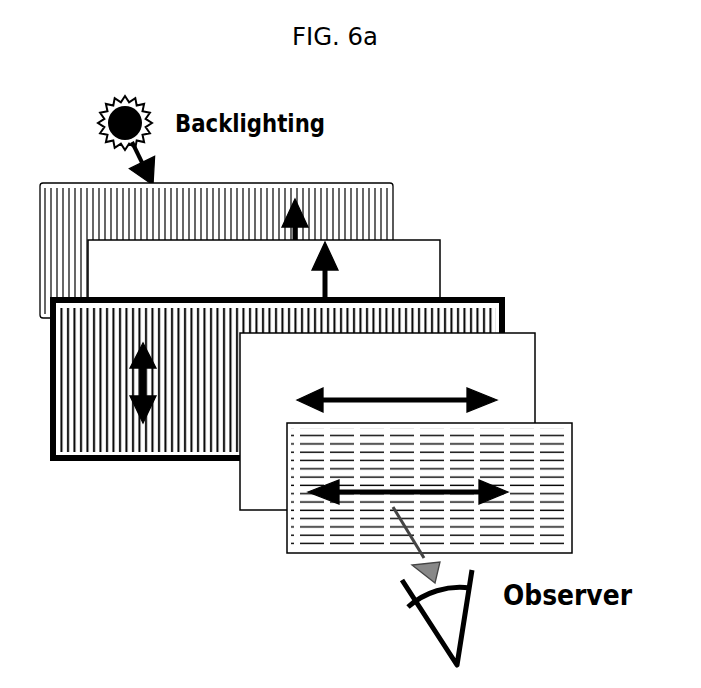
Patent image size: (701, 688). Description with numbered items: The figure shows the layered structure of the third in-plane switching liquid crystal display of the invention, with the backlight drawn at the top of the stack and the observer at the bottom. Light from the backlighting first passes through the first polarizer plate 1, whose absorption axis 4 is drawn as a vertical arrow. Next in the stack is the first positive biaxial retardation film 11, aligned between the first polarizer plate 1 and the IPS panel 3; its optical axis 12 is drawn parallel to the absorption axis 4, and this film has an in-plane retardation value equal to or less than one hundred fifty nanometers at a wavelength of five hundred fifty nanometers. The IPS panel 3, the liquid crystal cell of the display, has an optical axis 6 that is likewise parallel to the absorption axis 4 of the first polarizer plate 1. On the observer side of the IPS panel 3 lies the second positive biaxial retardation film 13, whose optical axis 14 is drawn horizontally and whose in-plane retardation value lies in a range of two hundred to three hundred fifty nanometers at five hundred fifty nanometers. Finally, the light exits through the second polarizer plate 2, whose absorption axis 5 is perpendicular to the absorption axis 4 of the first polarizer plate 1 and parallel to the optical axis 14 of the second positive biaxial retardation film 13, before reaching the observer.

The first polarizer plate 1 is at (216, 250).
The absorption axis of the first polarizer plate 4 is at (319, 219).
The first positive biaxial retardation film 11 is at (264, 275).
The optical axis of the first positive biaxial retardation film 12 is at (358, 272).
The IPS panel 3 is at (277, 379).
The optical axis of the liquid crystal cell 6 is at (117, 383).
The second positive biaxial retardation film 13 is at (387, 421).
The optical axis of the second positive biaxial retardation film 14 is at (402, 379).
The second polarizer plate 2 is at (429, 488).
The absorption axis of the second polarizer plate 5 is at (406, 506).